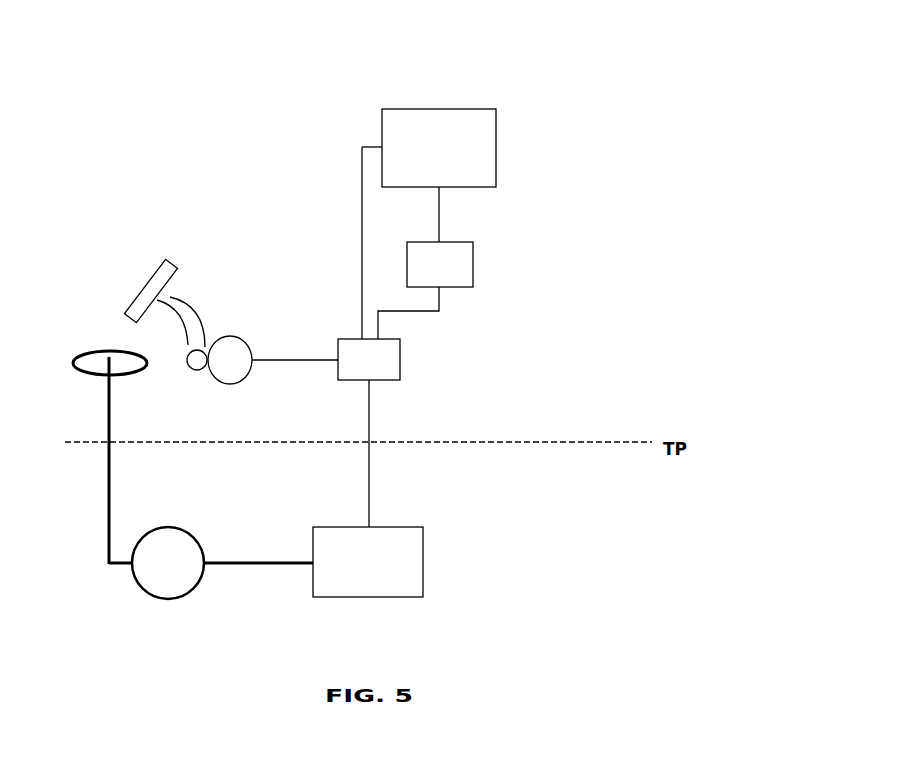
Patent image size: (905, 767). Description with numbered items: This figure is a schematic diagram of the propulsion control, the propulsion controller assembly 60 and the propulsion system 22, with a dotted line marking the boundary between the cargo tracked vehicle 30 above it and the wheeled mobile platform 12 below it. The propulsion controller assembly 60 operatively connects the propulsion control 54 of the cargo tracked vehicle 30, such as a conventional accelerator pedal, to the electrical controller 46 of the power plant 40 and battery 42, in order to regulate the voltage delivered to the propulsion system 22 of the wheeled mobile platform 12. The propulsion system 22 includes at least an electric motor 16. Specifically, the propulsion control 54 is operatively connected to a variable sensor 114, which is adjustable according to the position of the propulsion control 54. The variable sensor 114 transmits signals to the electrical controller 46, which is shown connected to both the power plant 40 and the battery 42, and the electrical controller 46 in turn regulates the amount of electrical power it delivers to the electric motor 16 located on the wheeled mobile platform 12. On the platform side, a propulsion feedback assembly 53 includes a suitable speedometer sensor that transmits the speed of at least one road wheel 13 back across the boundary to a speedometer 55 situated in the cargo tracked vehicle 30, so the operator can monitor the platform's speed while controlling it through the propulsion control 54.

The power plant 40 is at (443, 108).
The battery 42 is at (473, 243).
The electrical controller 46 is at (400, 360).
The electric motor 16 is at (423, 548).
The propulsion system 22 is at (310, 528).
The road wheel 13 is at (193, 590).
The propulsion feedback assembly 53 is at (107, 533).
The speedometer 55 is at (90, 368).
The propulsion control 54 is at (148, 285).
The variable sensor 114 is at (241, 337).
The propulsion controller assembly 60 is at (287, 375).
The cargo tracked vehicle 30 is at (610, 446).
The wheeled mobile platform 12 is at (610, 446).